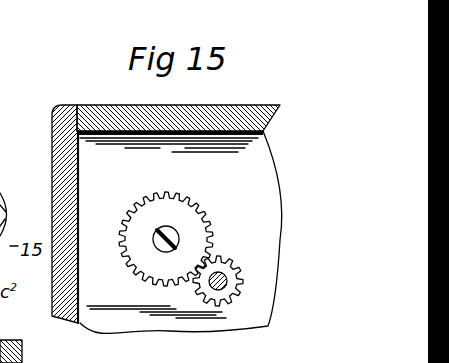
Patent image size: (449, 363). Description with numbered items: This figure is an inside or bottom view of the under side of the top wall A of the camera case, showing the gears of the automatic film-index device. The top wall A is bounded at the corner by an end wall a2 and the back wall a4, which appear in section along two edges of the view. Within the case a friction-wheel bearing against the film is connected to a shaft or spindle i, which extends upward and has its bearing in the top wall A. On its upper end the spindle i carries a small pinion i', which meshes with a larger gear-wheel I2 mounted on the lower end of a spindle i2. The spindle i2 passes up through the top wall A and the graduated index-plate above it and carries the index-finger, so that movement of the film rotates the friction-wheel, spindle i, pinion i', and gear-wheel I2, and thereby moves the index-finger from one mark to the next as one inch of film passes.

The top wall A is at (180, 232).
The end wall a2 is at (58, 155).
The back wall a4 is at (103, 110).
The gear-wheel I2 is at (145, 252).
The spindle i2 is at (178, 233).
The shaft or spindle i is at (237, 268).
The pinion i' is at (211, 288).